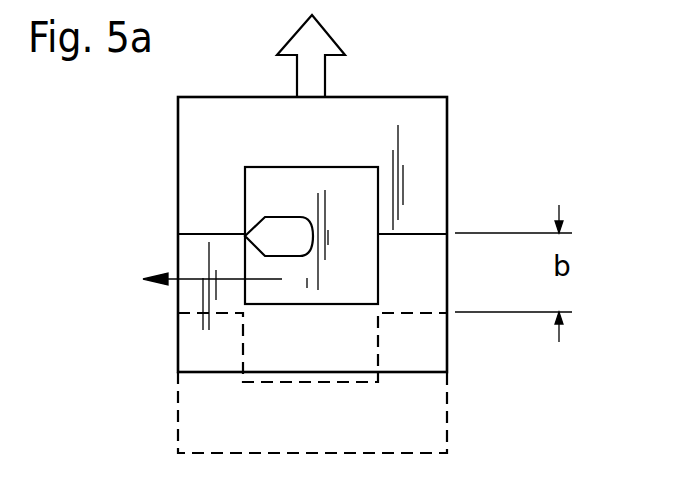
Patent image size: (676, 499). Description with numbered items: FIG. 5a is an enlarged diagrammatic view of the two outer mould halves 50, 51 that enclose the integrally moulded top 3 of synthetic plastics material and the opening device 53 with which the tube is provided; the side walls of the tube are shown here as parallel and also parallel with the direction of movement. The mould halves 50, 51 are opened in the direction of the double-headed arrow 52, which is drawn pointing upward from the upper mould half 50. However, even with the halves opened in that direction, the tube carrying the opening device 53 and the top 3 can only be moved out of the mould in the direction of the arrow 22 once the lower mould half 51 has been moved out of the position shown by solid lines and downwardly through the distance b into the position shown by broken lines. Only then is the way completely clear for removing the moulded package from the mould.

The outer mould half 50 is at (430, 160).
The top 3 is at (365, 218).
The opening device 53 is at (283, 223).
The arrow 22 is at (233, 278).
The lower mould half 51 is at (225, 303).
The double-headed arrow 52 is at (318, 47).